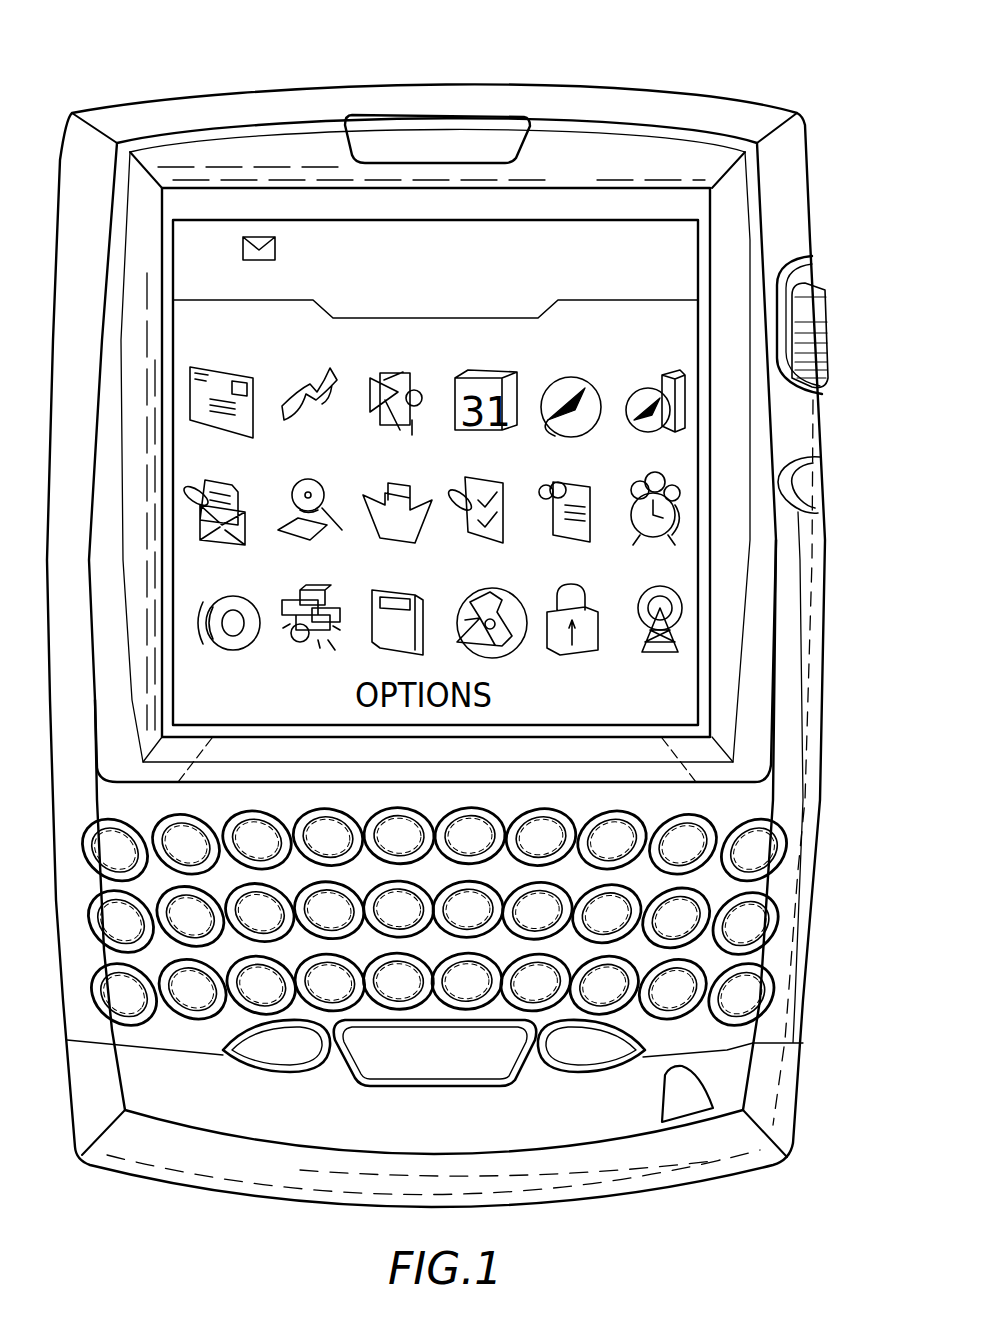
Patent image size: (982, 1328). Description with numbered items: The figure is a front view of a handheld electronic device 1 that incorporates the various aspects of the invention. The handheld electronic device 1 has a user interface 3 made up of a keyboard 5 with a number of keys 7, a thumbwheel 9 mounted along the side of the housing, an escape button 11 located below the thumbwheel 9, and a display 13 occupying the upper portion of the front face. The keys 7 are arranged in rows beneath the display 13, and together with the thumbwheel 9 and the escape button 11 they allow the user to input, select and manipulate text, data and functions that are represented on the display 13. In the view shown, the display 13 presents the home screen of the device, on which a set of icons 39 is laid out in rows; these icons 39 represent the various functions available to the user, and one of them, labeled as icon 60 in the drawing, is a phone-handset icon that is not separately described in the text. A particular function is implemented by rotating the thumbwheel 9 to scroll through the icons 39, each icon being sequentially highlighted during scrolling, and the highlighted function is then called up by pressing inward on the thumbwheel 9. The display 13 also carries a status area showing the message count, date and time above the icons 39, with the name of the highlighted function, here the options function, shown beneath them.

The handheld electronic device 1 is at (95, 91).
The user interface 3 is at (558, 206).
The keyboard 5 is at (478, 943).
The keys 7 is at (760, 921).
The thumbwheel 9 is at (825, 306).
The escape button 11 is at (813, 480).
The display 13 is at (672, 248).
The icons 39 is at (406, 372).
The phone application icon 60 is at (318, 420).